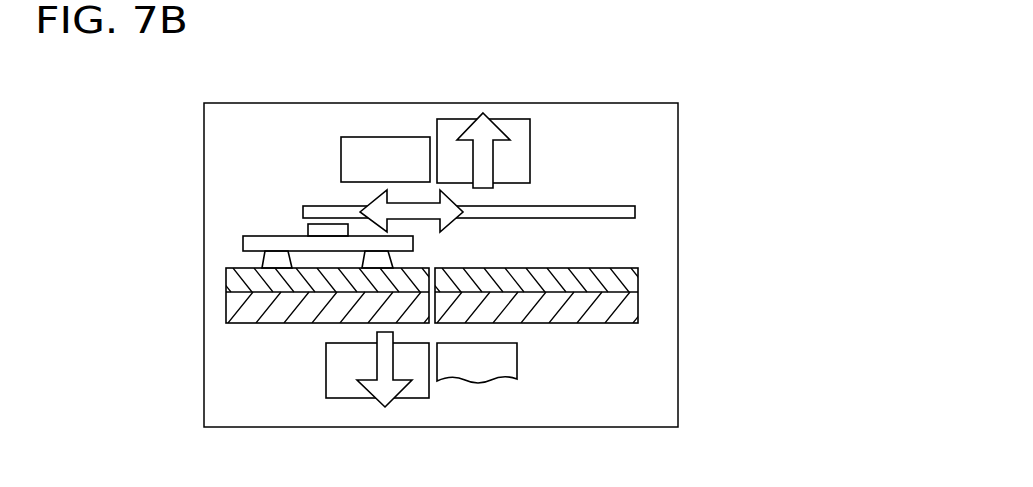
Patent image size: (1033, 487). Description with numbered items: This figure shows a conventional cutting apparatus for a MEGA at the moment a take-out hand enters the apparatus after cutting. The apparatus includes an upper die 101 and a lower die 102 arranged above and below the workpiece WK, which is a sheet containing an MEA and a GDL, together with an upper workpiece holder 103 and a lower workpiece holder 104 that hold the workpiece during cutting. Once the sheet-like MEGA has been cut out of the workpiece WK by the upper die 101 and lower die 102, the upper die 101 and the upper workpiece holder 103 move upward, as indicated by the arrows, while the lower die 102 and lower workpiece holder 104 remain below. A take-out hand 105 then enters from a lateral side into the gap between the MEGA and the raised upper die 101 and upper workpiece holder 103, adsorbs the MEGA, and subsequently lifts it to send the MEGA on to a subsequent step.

The upper die 101 is at (516, 118).
The lower die 102 is at (419, 403).
The upper workpiece holder 103 is at (377, 136).
The lower workpiece holder 104 is at (518, 370).
The take-out hand 105 is at (617, 206).
The workpiece WK is at (615, 268).
The element MEGA is at (278, 323).